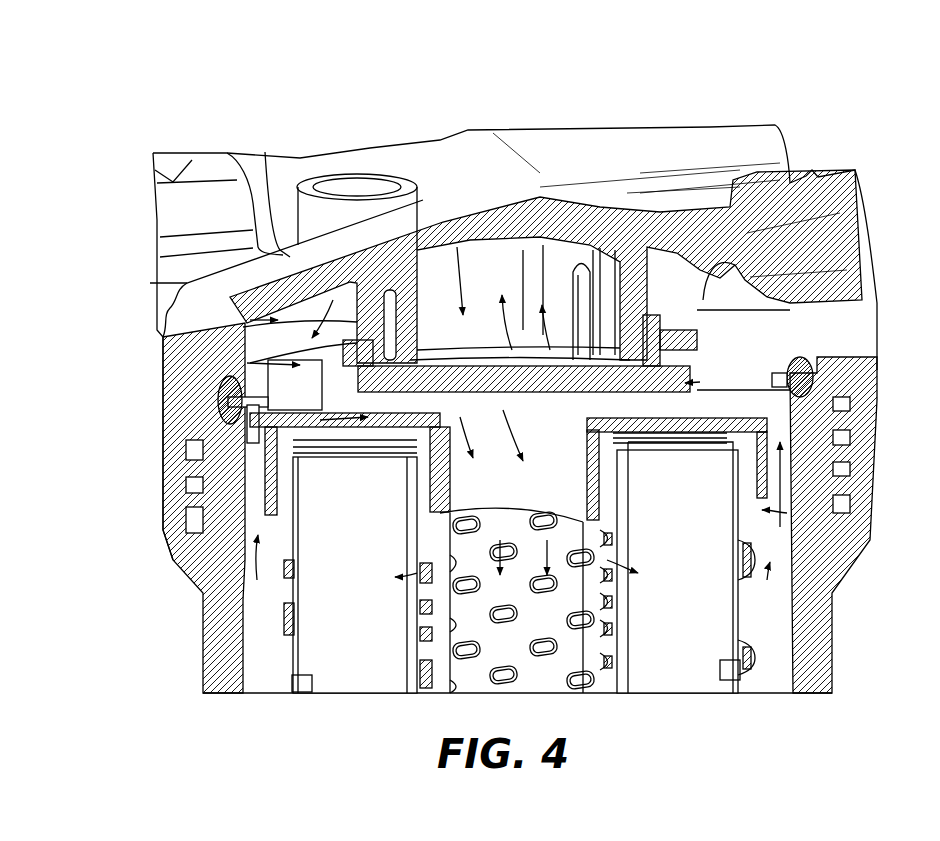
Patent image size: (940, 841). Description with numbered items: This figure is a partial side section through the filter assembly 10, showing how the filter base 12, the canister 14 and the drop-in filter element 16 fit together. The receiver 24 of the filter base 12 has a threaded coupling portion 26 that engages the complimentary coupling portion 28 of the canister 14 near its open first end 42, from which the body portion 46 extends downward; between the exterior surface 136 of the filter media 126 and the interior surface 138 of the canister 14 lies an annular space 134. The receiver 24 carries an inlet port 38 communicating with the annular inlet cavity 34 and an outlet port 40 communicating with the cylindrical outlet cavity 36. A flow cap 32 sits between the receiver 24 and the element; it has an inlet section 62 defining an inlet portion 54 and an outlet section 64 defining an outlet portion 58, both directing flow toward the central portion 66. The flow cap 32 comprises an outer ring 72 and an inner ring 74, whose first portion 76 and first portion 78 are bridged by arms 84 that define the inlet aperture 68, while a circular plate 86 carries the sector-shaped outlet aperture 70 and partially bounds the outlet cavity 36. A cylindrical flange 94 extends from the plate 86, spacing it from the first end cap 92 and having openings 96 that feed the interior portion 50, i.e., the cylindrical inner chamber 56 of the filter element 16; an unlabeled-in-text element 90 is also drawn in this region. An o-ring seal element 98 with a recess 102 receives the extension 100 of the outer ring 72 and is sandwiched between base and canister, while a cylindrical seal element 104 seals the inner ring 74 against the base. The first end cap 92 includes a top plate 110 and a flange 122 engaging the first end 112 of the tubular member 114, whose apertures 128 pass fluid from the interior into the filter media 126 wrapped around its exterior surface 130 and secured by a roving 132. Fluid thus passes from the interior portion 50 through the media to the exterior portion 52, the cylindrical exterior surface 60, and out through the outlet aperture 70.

The filter assembly 10 is at (808, 68).
The filter base 12 is at (697, 127).
The canister 14 is at (832, 662).
The filter element 16 is at (685, 700).
The receiver 24 is at (153, 443).
The coupling portion 26 is at (195, 483).
The complimentary coupling portion 28 is at (200, 503).
The flow cap 32 is at (790, 337).
The inlet cavity 34 is at (260, 330).
The outlet cavity 36 is at (543, 257).
The inlet port 38 is at (157, 247).
The outlet port 40 is at (838, 168).
The first end 42 is at (187, 607).
The body portion 46 is at (203, 687).
The interior portion 50 is at (540, 688).
The exterior portion 52 is at (747, 622).
The inlet portion 54 is at (257, 377).
The cylindrical inner chamber 56 is at (468, 680).
The outlet portion 58 is at (717, 327).
The cylindrical exterior surface 60 is at (787, 527).
The inlet section 62 is at (207, 310).
The outlet section 64 is at (737, 317).
The central portion 66 is at (462, 238).
The inlet aperture 68 is at (280, 215).
The outlet aperture 70 is at (580, 262).
The outer ring 72 is at (217, 453).
The inner ring 74 is at (350, 330).
The first portion 76 is at (218, 398).
The first portion 78 is at (343, 353).
The arms 84 is at (295, 392).
The plate 86 is at (465, 365).
The insert wall 90 is at (200, 547).
The first end cap 92 is at (200, 578).
The flange 94 is at (578, 405).
The openings 96 is at (353, 450).
The seal element 98 is at (220, 412).
The extension 100 is at (813, 397).
The recess 102 is at (803, 375).
The seal element 104 is at (376, 300).
The top plate 110 is at (687, 420).
The first end 112 is at (613, 487).
The tubular member 114 is at (600, 587).
The flange 122 is at (417, 487).
The filter media 126 is at (343, 660).
The apertures 128 is at (440, 627).
The exterior surface 130 is at (410, 657).
The roving 132 is at (255, 625).
The space 134 is at (253, 667).
The exterior surface 136 is at (287, 670).
The interior surface 138 is at (253, 687).